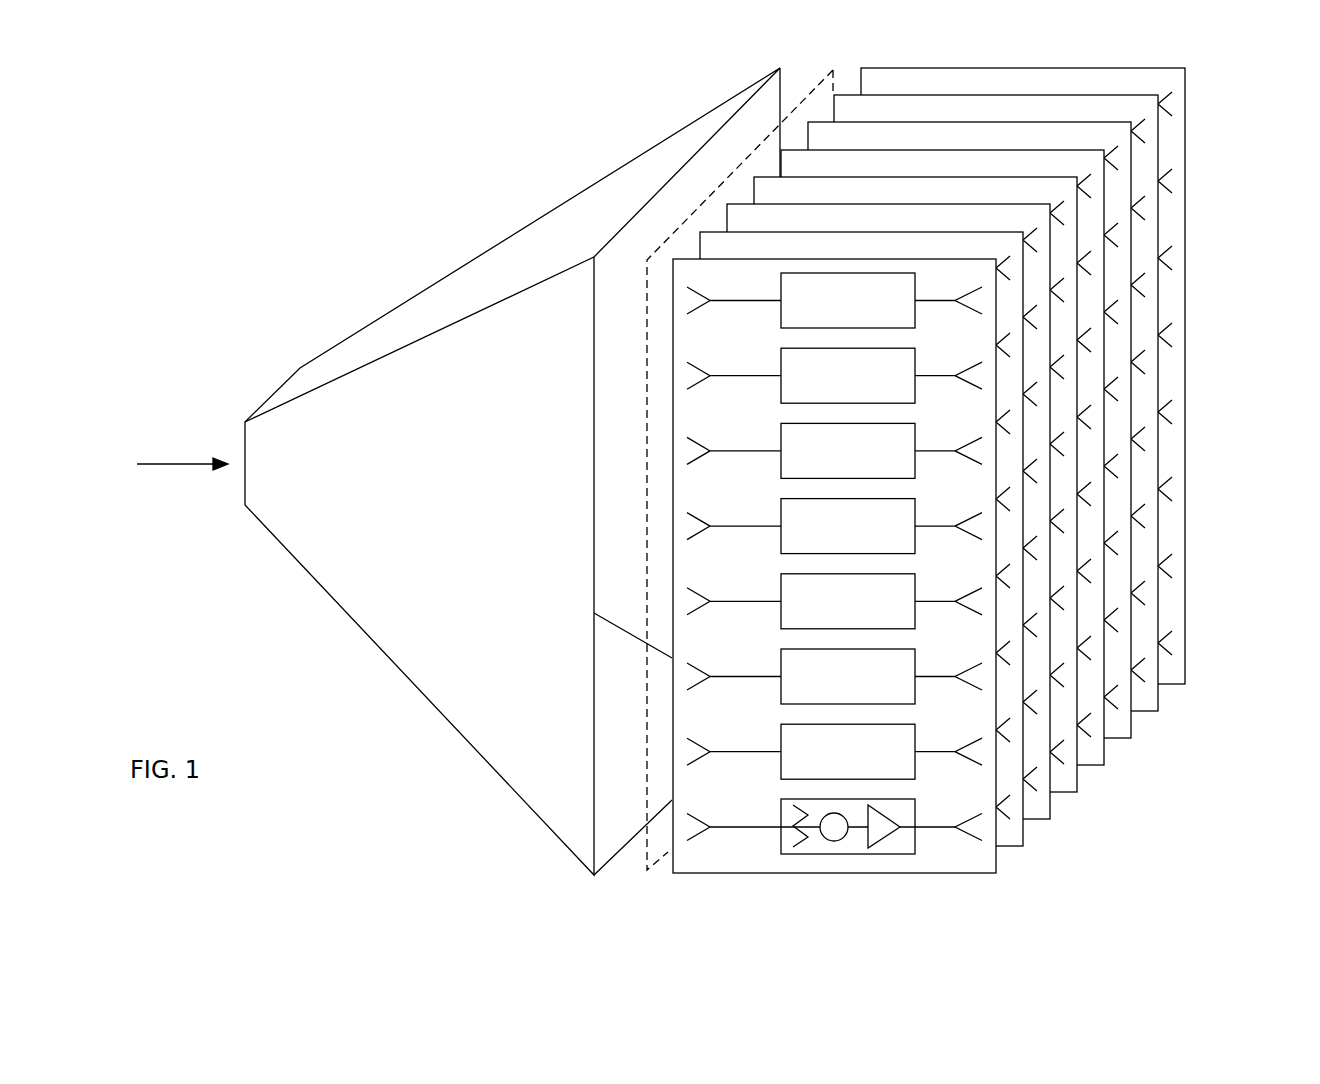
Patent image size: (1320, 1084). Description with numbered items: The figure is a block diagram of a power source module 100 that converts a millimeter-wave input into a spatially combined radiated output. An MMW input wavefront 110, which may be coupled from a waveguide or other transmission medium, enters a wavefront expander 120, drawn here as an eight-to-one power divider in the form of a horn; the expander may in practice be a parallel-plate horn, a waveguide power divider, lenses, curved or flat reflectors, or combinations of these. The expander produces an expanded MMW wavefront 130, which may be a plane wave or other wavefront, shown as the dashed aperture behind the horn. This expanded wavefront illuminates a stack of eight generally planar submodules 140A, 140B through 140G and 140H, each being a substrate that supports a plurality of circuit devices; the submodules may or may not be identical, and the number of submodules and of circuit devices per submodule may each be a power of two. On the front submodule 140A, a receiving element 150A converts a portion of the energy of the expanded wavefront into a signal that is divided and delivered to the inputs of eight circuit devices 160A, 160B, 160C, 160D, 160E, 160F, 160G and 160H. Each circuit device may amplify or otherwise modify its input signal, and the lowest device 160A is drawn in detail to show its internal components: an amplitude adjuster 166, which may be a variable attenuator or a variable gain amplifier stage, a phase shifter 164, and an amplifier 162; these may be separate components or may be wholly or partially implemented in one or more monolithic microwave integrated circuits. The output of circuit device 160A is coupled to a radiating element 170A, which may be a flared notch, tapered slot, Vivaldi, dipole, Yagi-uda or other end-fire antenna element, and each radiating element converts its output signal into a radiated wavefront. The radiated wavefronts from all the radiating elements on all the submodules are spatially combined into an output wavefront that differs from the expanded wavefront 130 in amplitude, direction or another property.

The power source module 100 is at (184, 77).
The MMW input wavefront 110 is at (182, 451).
The wavefront expander 120 is at (323, 588).
The expanded MMW wavefront 130 is at (713, 188).
The submodule 140A is at (996, 873).
The submodule 140B is at (1023, 846).
The submodule 140G is at (1143, 712).
The submodule 140H is at (1172, 685).
The receiving element 150A is at (690, 826).
The circuit device 160A is at (900, 854).
The circuit device 160B is at (834, 751).
The circuit device 160C is at (834, 676).
The circuit device 160D is at (834, 601).
The circuit device 160E is at (834, 526).
The circuit device 160F is at (834, 450).
The circuit device 160G is at (834, 375).
The circuit device 160H is at (834, 300).
The attenuator 162 is at (793, 838).
The phase shifter 164 is at (830, 841).
The amplitude adjuster 166 is at (878, 843).
The radiating element 170A is at (983, 828).